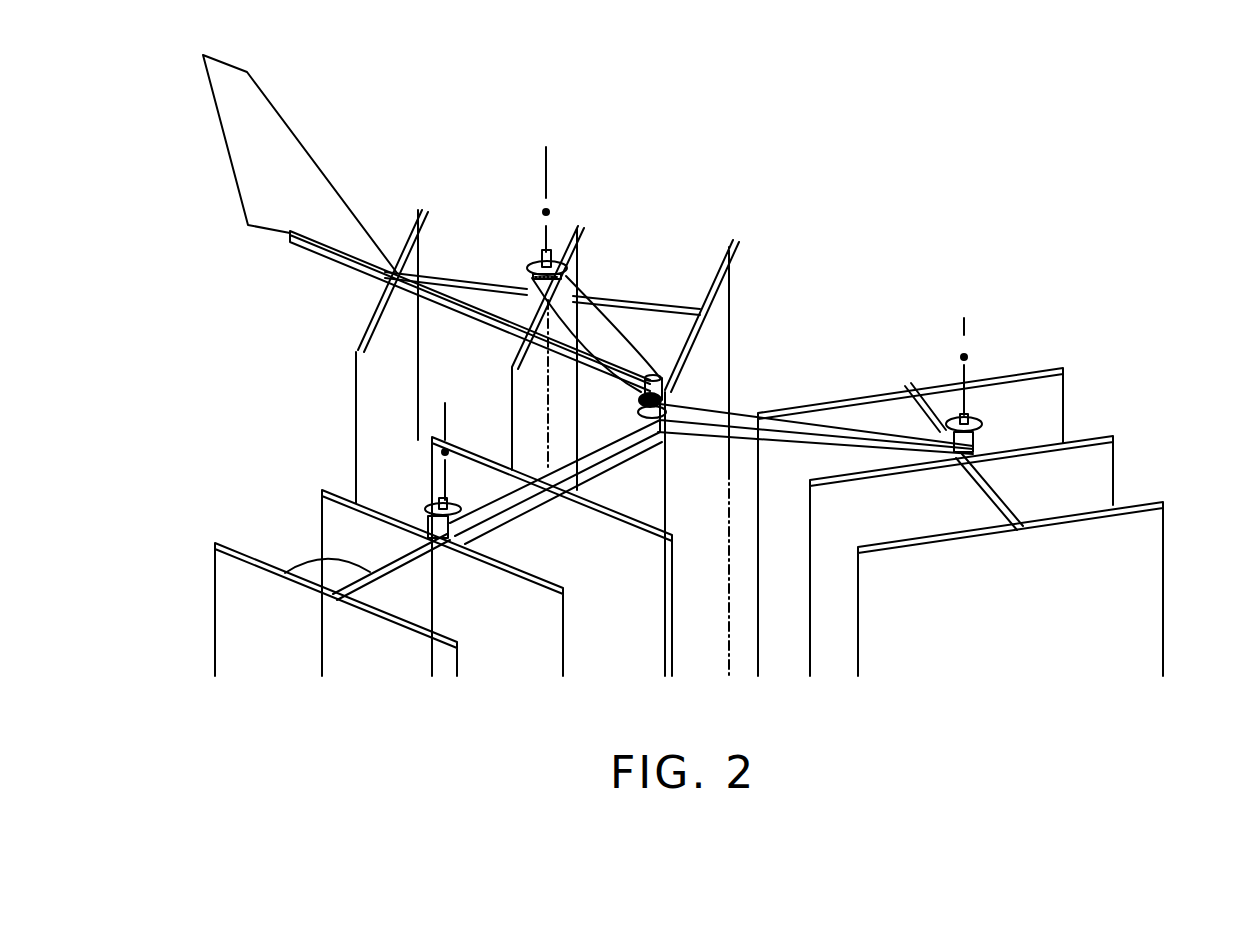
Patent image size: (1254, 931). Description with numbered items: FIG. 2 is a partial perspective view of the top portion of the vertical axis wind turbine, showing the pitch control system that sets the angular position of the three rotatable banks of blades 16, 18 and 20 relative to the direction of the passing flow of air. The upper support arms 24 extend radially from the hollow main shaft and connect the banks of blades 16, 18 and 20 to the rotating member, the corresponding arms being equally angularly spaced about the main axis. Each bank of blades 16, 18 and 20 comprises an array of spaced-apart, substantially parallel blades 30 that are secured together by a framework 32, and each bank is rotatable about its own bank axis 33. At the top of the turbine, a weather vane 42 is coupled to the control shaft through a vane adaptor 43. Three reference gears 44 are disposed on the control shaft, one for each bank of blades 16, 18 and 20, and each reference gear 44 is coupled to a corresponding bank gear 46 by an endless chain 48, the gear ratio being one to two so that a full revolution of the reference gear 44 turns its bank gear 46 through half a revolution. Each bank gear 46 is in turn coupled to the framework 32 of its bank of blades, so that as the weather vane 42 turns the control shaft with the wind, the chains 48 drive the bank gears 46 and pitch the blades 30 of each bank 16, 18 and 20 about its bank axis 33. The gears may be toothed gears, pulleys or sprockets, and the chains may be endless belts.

The bank of blades 16 is at (1147, 392).
The bank of blades 18 is at (510, 205).
The bank of blades 20 is at (192, 533).
The upper support arms 24 is at (583, 327).
The blades 30 is at (417, 669).
The framework 32 is at (473, 283).
The bank axis 33 is at (548, 172).
The weather vane 42 is at (273, 203).
The vane adaptor 43 is at (670, 370).
The reference gears 44 is at (683, 390).
The bank gears 46 is at (560, 268).
The endless chain 48 is at (578, 290).